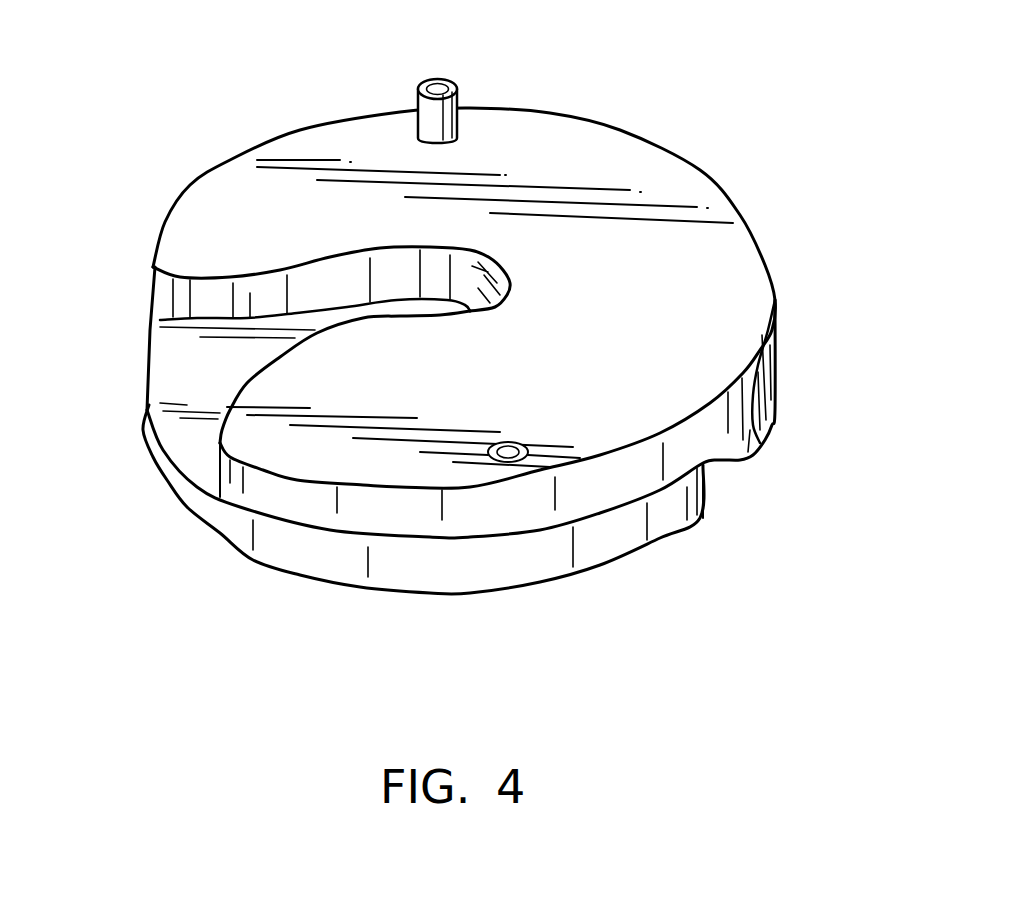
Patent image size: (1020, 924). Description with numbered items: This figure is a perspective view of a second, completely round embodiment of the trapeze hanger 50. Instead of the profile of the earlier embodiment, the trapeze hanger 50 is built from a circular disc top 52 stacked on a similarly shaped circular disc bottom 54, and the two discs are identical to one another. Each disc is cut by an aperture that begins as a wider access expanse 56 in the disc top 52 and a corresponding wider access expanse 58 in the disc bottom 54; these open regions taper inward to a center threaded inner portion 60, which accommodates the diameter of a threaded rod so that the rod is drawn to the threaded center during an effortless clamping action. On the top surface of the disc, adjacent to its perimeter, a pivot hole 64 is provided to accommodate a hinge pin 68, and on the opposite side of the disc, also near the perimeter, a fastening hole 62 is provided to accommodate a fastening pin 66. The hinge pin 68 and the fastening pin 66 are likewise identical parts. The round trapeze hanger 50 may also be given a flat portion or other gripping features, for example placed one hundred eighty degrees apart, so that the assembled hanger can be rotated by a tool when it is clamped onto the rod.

The trapeze hanger 50 is at (695, 126).
The circular disc top 52 is at (230, 160).
The circular disc bottom 54 is at (140, 413).
The wider access expanse of the aperture 56 is at (143, 333).
The wider access expanse of the aperture 58 is at (755, 465).
The center threaded inner portion 60 is at (513, 273).
The fastening hole 62 is at (420, 133).
The pivot hole 64 is at (523, 443).
The fastening pin 66 is at (450, 75).
The hinge pin 68 is at (507, 445).